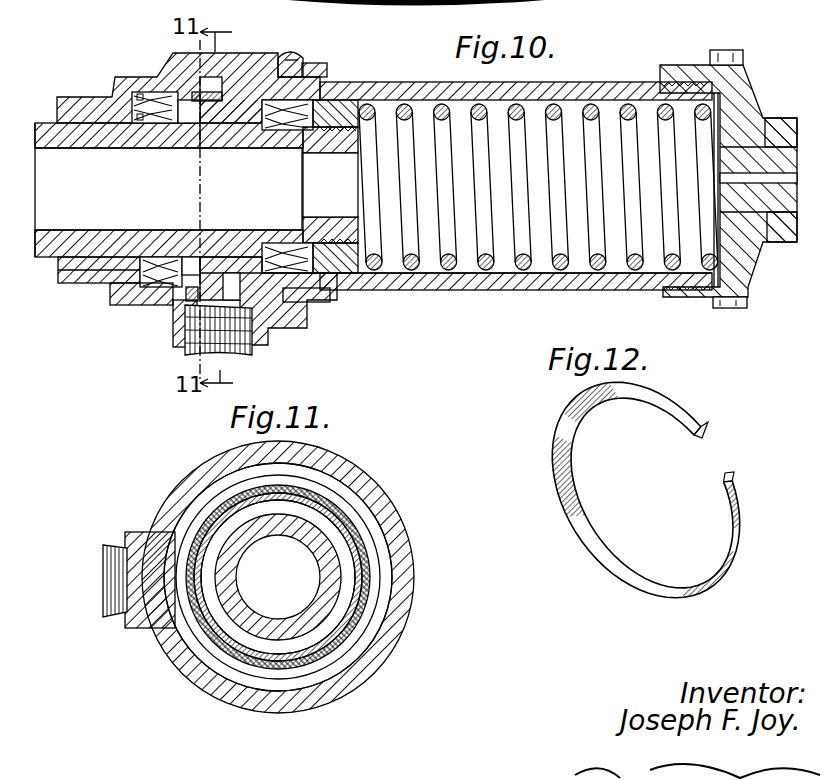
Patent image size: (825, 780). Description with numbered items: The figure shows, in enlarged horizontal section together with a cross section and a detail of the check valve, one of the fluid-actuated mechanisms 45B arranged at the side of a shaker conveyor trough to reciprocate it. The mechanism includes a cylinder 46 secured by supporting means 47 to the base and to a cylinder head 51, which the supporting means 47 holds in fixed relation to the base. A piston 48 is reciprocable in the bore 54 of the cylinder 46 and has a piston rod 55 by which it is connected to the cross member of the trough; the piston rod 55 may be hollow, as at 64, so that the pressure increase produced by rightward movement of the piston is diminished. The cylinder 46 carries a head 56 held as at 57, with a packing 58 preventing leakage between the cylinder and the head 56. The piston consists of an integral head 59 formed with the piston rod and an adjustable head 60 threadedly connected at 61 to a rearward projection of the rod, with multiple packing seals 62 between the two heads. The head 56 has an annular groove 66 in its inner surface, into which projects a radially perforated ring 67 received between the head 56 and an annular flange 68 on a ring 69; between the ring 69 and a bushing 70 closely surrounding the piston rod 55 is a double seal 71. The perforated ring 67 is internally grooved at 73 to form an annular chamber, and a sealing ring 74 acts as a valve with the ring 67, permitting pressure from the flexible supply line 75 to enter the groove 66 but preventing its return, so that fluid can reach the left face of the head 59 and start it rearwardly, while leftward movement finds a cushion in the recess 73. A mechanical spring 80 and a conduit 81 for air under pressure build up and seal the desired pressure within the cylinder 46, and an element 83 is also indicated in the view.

In FIG. 10, the mechanism 45B is at (473, 290).
In FIG. 10, the cylinder 46 is at (424, 82).
In FIG. 10, the supporting means 47 is at (785, 242).
In FIG. 10, the piston 48 is at (288, 56).
In FIG. 10, the cylinder head 51 is at (678, 65).
In FIG. 10, the bore 54 is at (430, 272).
In FIG. 10, the piston rod 55 is at (43, 122).
In FIG. 11, the piston rod 55 is at (337, 598).
In FIG. 10, the head 56 is at (133, 76).
In FIG. 10, the holding means 57 is at (305, 67).
In FIG. 10, the packing 58 is at (280, 70).
In FIG. 10, the integral head 59 is at (280, 323).
In FIG. 10, the adjustable head 60 is at (345, 262).
In FIG. 10, the threaded connection 61 is at (340, 277).
In FIG. 10, the packing seals 62 is at (300, 101).
In FIG. 10, the hollow 64 is at (78, 162).
In FIG. 10, the annular groove 66 is at (216, 90).
In FIG. 10, the radially perforated ring 67 is at (190, 320).
In FIG. 11, the radially perforated ring 67 is at (333, 497).
In FIG. 10, the annular flange 68 is at (157, 297).
In FIG. 11, the annular flange 68 is at (343, 637).
In FIG. 10, the ring 69 is at (163, 290).
In FIG. 10, the bushing 70 is at (68, 283).
In FIG. 10, the double seal 71 is at (133, 270).
In FIG. 11, the internal groove 73 is at (370, 542).
In FIG. 10, the sealing ring 74 is at (187, 303).
In FIG. 11, the sealing ring 74 is at (358, 525).
In FIG. 12, the sealing ring 74 is at (668, 412).
In FIG. 10, the supply line 75 is at (220, 78).
In FIG. 10, the mechanical spring 80 is at (562, 270).
In FIG. 10, the conduit 81 is at (762, 180).
In FIG. 10, the arm 83 is at (403, 0).